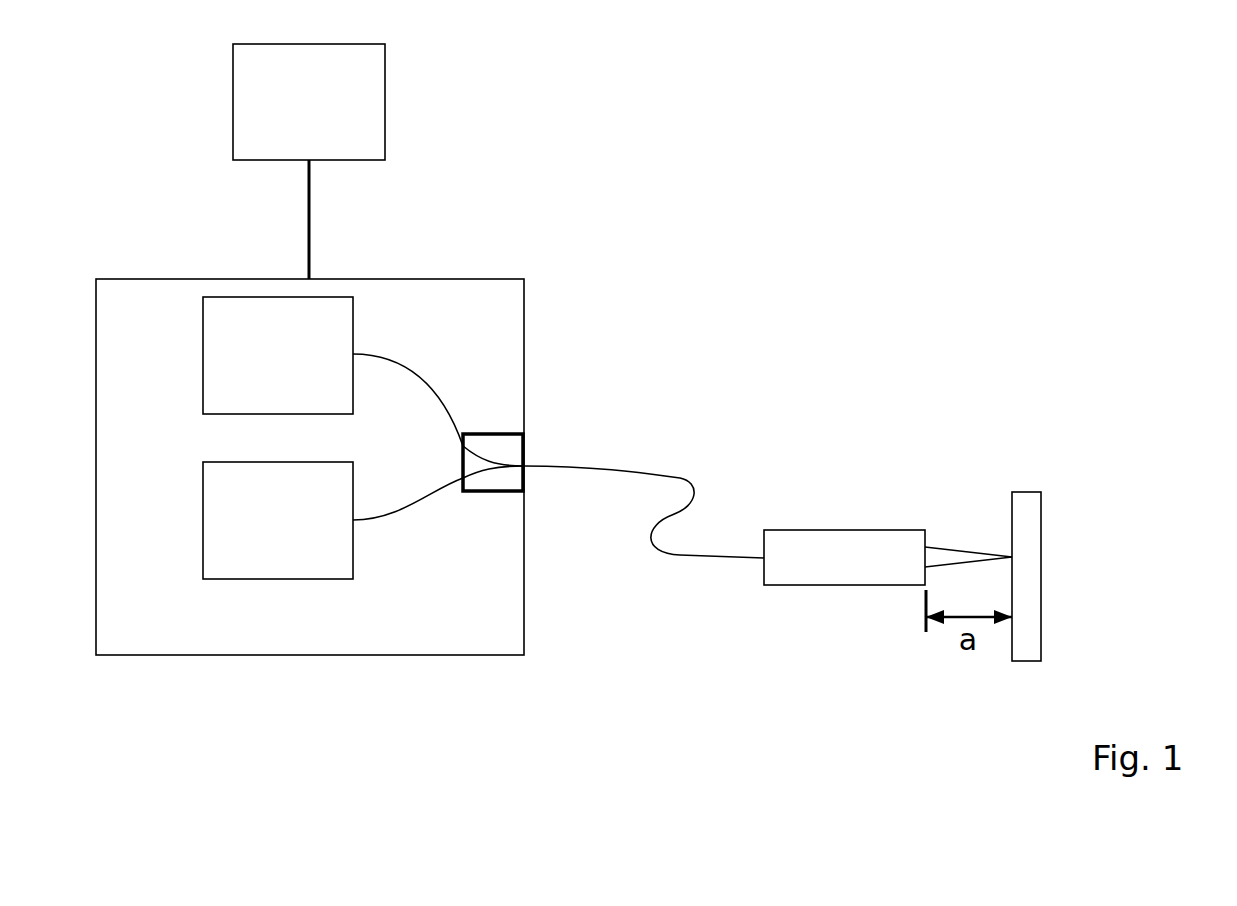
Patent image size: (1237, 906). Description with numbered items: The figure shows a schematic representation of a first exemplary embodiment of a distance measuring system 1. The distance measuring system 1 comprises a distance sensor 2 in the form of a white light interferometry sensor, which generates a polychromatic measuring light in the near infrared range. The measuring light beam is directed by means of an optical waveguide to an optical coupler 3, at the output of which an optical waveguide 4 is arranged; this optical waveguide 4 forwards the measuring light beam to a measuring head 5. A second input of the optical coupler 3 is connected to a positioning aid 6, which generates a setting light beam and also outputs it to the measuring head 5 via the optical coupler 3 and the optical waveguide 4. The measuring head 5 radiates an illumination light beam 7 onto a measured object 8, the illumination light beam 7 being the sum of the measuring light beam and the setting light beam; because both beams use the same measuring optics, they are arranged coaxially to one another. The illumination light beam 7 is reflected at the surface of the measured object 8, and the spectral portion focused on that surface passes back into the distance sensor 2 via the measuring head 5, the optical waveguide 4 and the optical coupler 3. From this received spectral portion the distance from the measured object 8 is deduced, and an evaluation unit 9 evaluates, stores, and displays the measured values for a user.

The distance measuring system 1 is at (933, 123).
The distance sensor 2 is at (269, 540).
The optical coupler 3 is at (493, 410).
The optical waveguide 4 is at (680, 478).
The measuring head 5 is at (829, 542).
The positioning aid 6 is at (269, 375).
The illumination light beam 7 is at (953, 557).
The measured object 8 is at (1030, 536).
The evaluation unit 9 is at (299, 122).